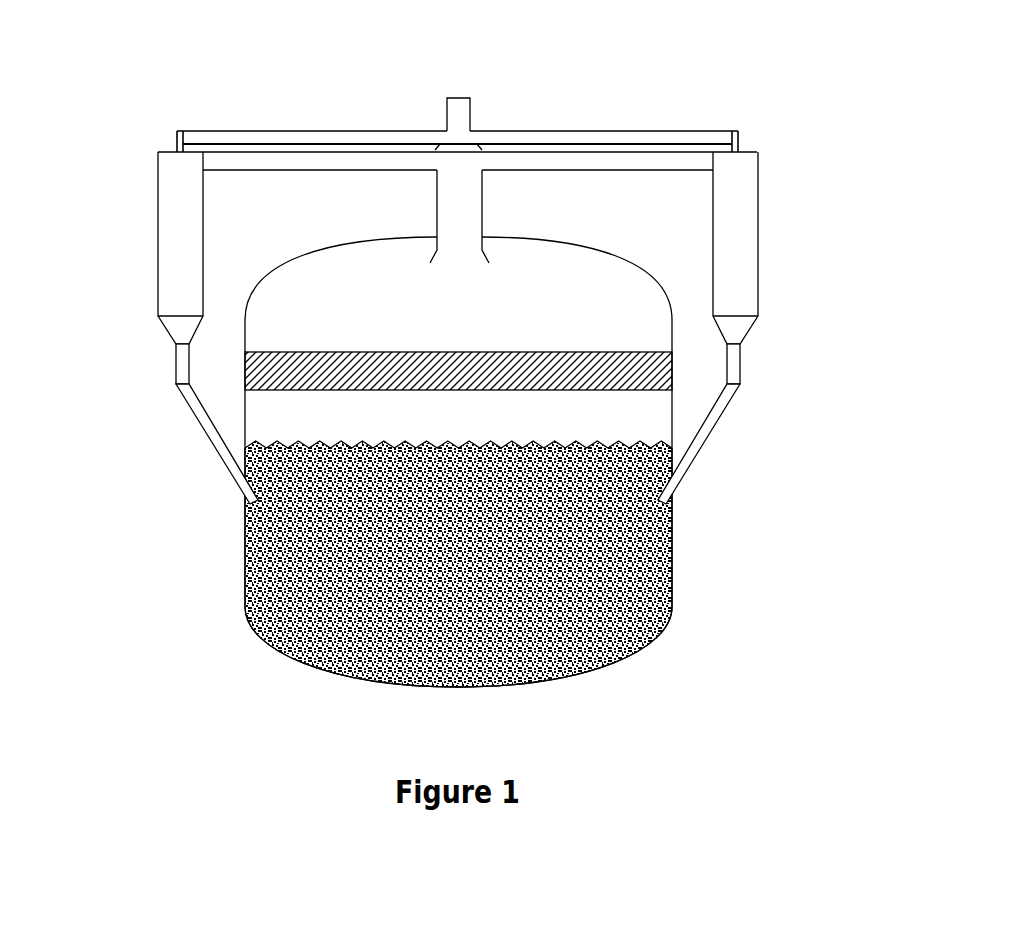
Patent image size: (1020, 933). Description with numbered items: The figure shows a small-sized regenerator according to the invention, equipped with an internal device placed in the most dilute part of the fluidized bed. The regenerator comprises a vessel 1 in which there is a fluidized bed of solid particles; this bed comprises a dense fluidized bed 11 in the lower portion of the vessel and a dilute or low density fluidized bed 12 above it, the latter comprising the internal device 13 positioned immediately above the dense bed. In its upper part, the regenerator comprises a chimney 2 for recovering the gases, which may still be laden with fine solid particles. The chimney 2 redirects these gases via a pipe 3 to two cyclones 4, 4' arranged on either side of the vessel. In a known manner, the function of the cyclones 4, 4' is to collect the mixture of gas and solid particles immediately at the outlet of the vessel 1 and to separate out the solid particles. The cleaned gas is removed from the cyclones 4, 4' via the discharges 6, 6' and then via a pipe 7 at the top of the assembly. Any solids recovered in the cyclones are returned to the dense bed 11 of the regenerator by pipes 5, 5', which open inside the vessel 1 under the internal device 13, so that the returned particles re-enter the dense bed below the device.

The vessel 1 is at (245, 597).
The chimney 2 is at (455, 212).
The pipe 3 is at (345, 165).
The cyclone 4 is at (131, 248).
The cyclone 4' is at (800, 248).
The pipe 5 is at (170, 424).
The pipe 5' is at (758, 424).
The discharge 6 is at (317, 99).
The discharge 6' is at (598, 101).
The pipe 7 is at (451, 100).
The dense fluidized bed 11 is at (513, 634).
The dilute fluidized bed 12 is at (365, 283).
The internal device 13 is at (380, 372).